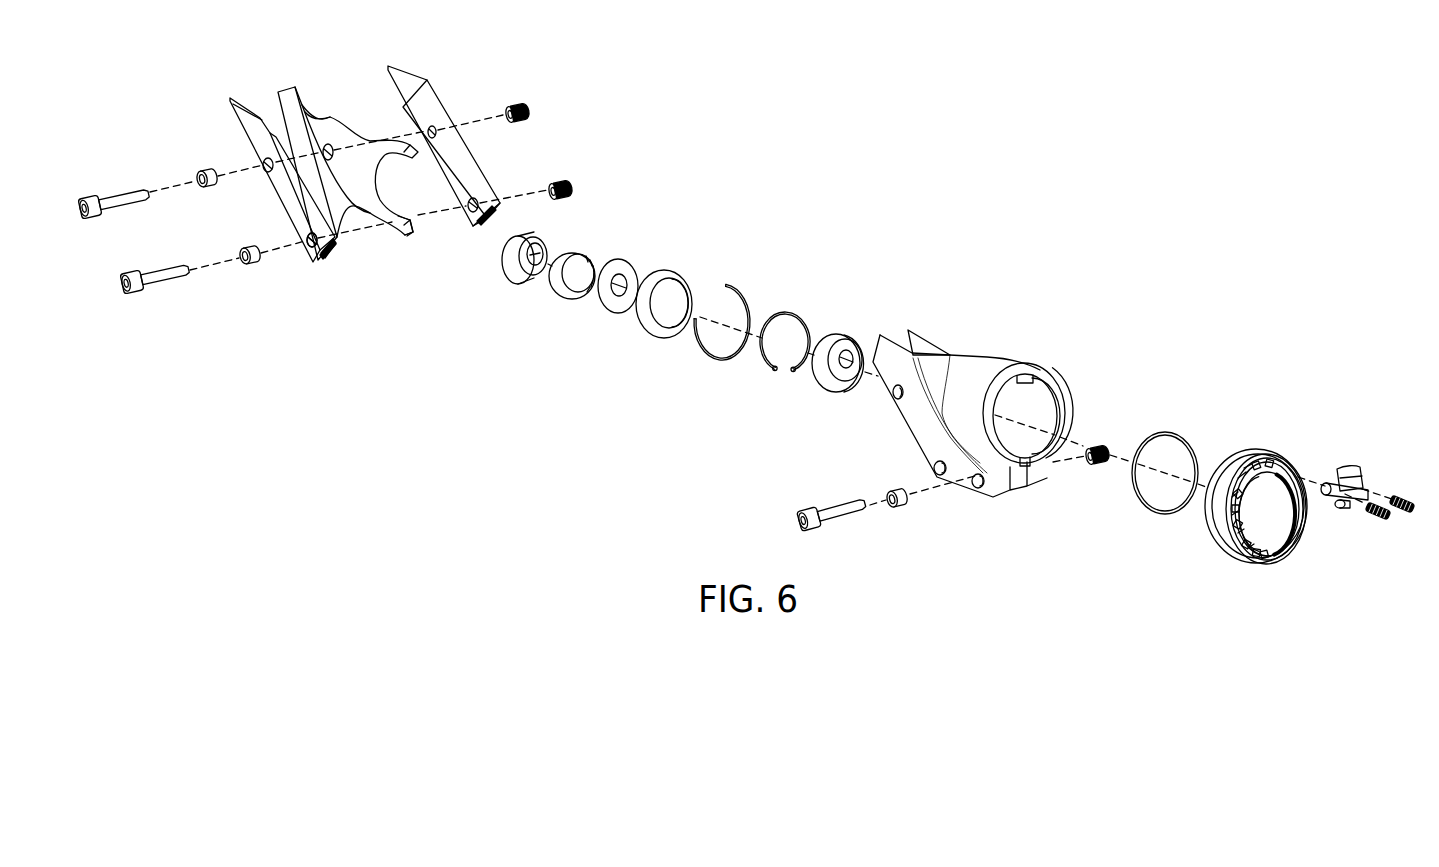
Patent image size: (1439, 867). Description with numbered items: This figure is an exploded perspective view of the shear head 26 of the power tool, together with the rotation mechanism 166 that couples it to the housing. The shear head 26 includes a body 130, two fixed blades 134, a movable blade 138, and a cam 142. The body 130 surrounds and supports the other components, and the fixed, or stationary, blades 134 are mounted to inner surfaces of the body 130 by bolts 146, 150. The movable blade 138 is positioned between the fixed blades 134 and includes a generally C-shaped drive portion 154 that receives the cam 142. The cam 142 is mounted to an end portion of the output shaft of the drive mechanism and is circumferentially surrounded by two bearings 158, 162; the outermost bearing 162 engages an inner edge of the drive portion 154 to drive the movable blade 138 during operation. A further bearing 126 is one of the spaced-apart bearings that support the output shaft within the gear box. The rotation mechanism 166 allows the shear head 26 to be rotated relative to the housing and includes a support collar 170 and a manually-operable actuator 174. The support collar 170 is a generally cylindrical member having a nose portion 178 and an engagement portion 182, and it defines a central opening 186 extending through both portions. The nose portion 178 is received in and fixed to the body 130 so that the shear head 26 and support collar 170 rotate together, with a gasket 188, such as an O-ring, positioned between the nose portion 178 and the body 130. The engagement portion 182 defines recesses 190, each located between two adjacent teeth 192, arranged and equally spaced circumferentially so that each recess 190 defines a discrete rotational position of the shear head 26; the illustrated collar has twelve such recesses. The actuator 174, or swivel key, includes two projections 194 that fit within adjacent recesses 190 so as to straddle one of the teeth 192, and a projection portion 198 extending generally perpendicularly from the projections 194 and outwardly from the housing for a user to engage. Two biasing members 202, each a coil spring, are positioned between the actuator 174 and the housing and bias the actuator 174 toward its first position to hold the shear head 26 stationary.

The shear head 26 is at (1034, 152).
The bearing 126 is at (812, 381).
The body 130 is at (1003, 365).
The fixed blades 134 is at (233, 112).
The movable blade 138 is at (292, 93).
The cam 142 is at (506, 275).
The bolt 146 is at (125, 194).
The bolt 150 is at (162, 270).
The drive portion 154 is at (397, 227).
The bearing 158 is at (555, 290).
The bearing 162 is at (645, 327).
The rotation mechanism 166 is at (1266, 400).
The support collar 170 is at (1214, 545).
The manually-operable actuator 174 is at (1340, 504).
The nose portion 178 is at (1226, 470).
The engagement portion 182 is at (1265, 455).
The central opening 186 is at (1283, 514).
The gasket 188 is at (1136, 505).
The recesses 190 is at (1256, 462).
The teeth 192 is at (1263, 459).
The projections 194 is at (1330, 486).
The projection portion 198 is at (1353, 477).
The biasing members 202 is at (1399, 498).